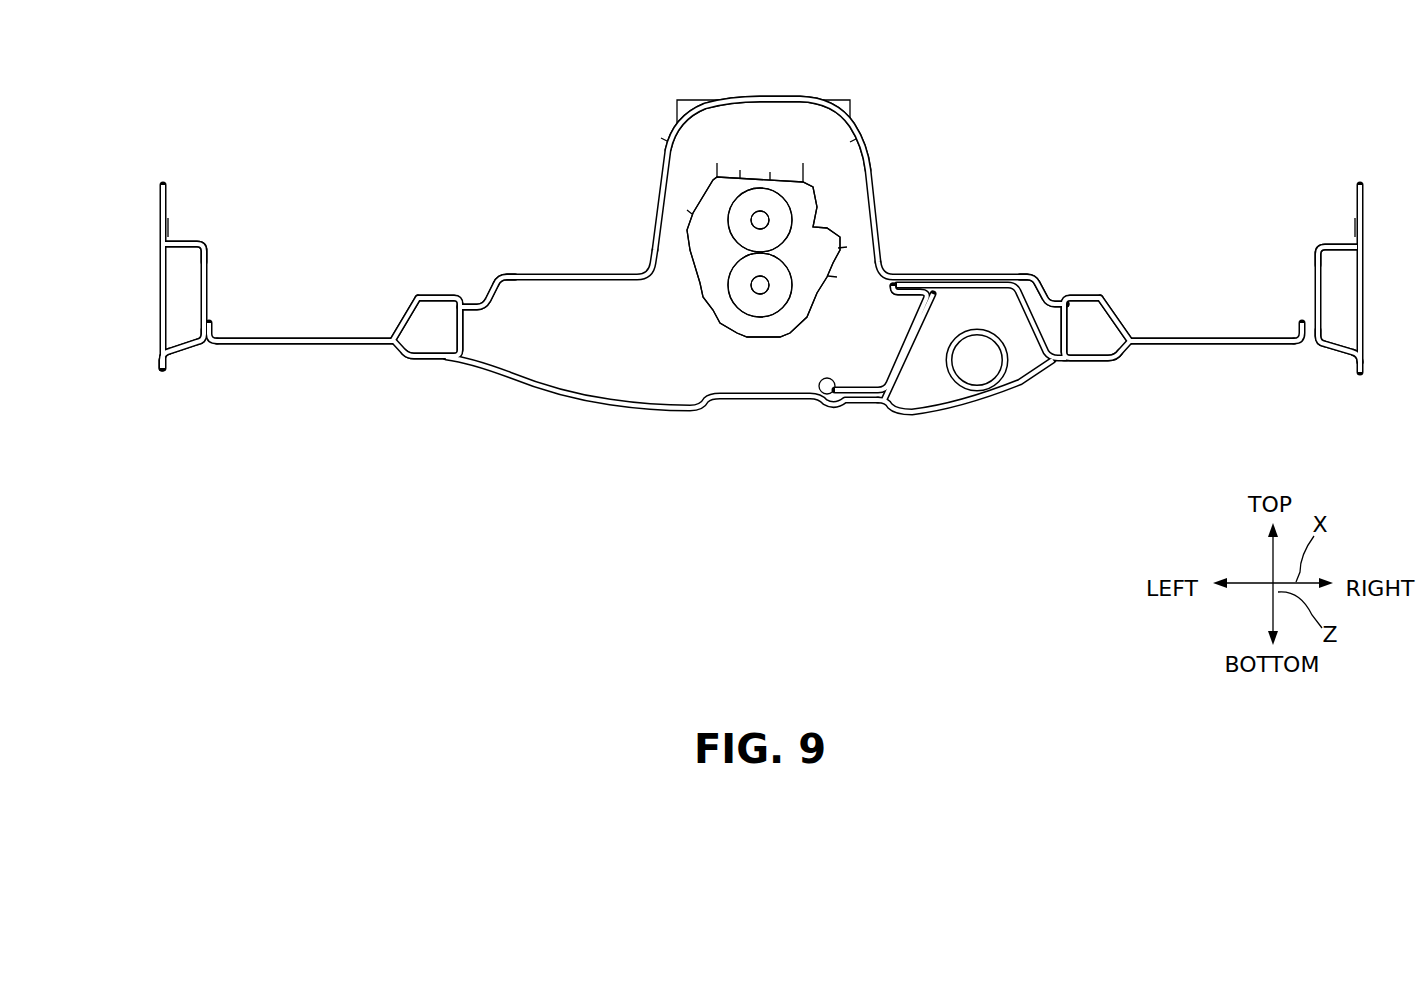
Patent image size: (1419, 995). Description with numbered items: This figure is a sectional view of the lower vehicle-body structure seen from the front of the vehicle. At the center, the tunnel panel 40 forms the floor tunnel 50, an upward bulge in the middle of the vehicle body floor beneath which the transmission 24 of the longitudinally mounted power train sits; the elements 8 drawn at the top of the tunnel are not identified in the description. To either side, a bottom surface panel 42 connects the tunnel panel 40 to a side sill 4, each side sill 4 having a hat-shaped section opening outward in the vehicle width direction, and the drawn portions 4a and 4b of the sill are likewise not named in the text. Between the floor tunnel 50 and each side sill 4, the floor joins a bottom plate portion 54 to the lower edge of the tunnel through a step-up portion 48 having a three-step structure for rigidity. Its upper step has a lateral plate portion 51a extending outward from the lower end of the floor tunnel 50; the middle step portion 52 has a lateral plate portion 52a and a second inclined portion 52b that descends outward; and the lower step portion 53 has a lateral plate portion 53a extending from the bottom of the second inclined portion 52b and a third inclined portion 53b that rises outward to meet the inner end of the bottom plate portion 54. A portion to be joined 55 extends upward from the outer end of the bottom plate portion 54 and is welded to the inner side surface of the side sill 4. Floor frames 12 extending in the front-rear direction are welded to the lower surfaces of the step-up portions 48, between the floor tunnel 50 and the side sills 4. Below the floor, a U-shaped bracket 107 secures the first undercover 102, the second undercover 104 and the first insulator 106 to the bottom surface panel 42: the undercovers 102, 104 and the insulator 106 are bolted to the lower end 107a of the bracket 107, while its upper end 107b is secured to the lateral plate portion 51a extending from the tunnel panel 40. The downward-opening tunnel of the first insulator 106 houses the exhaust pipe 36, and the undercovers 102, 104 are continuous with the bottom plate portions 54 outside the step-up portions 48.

The side sill 4 is at (204, 246).
The lower flange of side sill 4a is at (186, 344).
The upper flange of side sill 4b is at (186, 246).
The rail 8 is at (679, 98).
The floor frame 12 is at (465, 335).
The transmission 24 is at (831, 181).
The exhaust pipe 36 is at (980, 390).
The tunnel panel 40 is at (765, 88).
The bottom surface panel 42 is at (257, 394).
The step-up portion 48 is at (391, 297).
The floor tunnel 50 is at (652, 170).
The lateral plate portion 51a is at (560, 275).
The middle step portion 52 is at (505, 197).
The lateral plate portion 52a is at (504, 273).
The second inclined portion 52b is at (480, 290).
The lower step portion 53 is at (358, 436).
The lateral plate portion 53a is at (443, 312).
The third inclined portion 53b is at (413, 332).
The bottom plate portion 54 is at (300, 345).
The portion to be joined 55 is at (216, 344).
The first undercover 102 is at (606, 404).
The second undercover 104 is at (938, 410).
The first insulator 106 is at (960, 284).
The bracket 107 is at (871, 400).
The lower end 107a is at (820, 396).
The upper end 107b is at (896, 280).